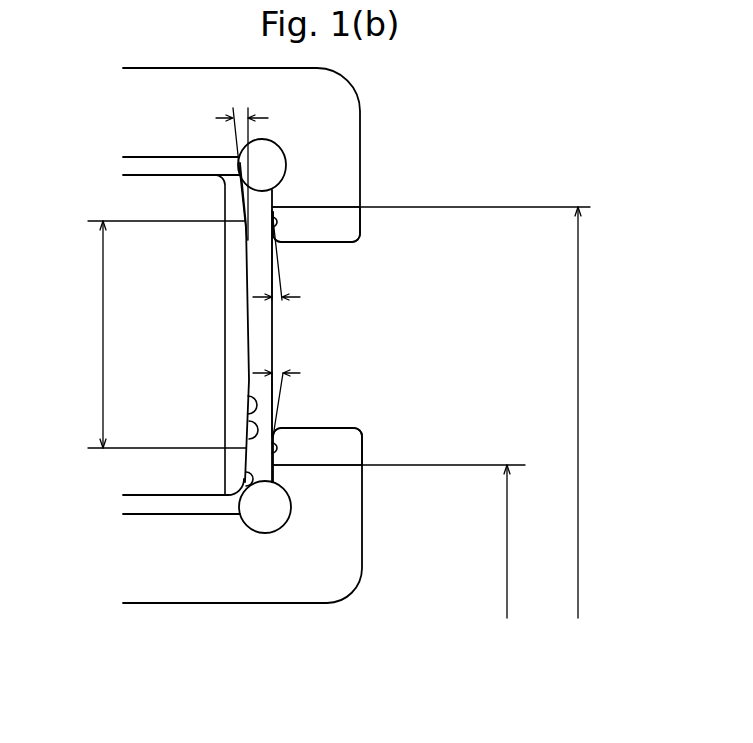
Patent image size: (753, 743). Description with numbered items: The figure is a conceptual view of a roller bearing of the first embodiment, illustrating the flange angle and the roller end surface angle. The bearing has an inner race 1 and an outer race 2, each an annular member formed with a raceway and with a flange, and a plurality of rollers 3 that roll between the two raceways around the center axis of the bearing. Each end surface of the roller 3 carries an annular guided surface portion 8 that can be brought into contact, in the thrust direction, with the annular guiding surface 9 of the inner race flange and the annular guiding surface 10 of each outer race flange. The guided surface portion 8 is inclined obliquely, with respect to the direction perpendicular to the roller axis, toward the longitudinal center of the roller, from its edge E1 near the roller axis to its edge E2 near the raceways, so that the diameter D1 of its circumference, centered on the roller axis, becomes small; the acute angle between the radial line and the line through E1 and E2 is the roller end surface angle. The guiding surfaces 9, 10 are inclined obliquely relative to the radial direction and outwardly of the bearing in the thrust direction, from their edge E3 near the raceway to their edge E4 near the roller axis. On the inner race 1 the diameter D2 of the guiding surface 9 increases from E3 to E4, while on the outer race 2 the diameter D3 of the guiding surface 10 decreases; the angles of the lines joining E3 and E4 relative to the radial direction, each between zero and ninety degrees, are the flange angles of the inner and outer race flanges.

The inner race 1 is at (170, 585).
The outer race 2 is at (172, 90).
The roller 3 is at (153, 188).
The annular guided surface portion 8 is at (252, 427).
The annular guiding surface 9 is at (278, 462).
The annular guiding surface 10 is at (273, 213).
The edge E1 is at (255, 398).
The edge E2 is at (247, 478).
The edge E3 is at (265, 170).
The edge E4 is at (273, 233).
The diameter D1 is at (159, 334).
The diameter D2 is at (411, 541).
The diameter D3 is at (447, 412).